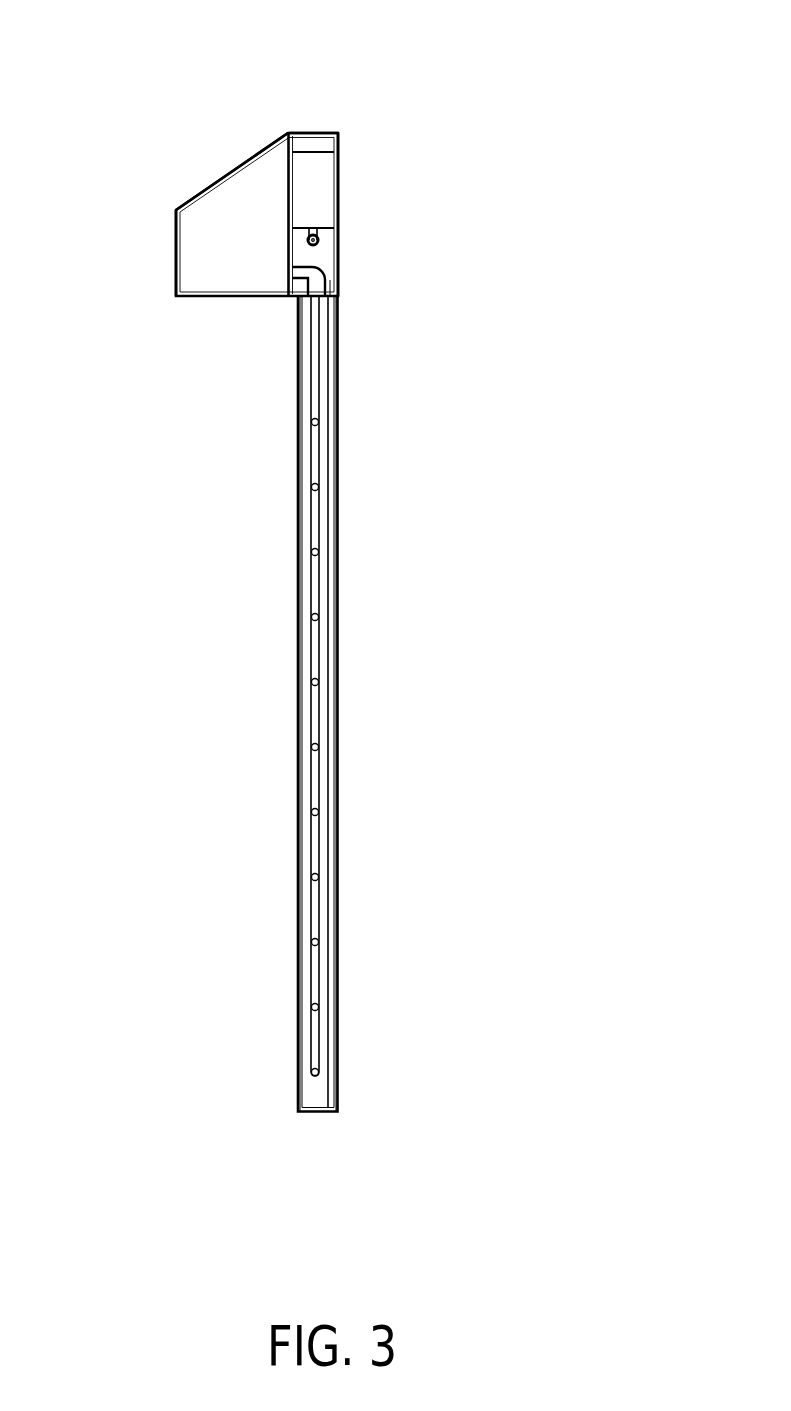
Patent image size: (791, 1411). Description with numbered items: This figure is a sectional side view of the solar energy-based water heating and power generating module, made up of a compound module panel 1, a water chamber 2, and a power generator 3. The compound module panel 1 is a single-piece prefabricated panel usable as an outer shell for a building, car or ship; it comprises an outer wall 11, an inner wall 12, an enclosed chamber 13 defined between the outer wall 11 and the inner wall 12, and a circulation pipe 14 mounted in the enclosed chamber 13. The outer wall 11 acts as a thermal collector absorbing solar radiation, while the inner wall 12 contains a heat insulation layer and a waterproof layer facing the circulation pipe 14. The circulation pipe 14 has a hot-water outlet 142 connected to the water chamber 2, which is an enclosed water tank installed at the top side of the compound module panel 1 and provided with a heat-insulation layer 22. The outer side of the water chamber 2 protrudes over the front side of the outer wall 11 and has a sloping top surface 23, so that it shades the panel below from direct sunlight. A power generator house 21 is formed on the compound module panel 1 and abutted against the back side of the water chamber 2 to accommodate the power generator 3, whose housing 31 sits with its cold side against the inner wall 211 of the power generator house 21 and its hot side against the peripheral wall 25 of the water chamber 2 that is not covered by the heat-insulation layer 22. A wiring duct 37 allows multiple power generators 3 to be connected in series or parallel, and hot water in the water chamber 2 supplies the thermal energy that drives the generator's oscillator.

The compound module panel 1 is at (360, 757).
The outer wall 11 is at (300, 852).
The inner wall 12 is at (340, 868).
The enclosed chamber 13 is at (325, 987).
The circulation pipe 14 is at (315, 663).
The hot-water outlet 142 is at (280, 296).
The water chamber 2 is at (153, 233).
The power generator house 21 is at (327, 262).
The inner wall of the power generator house 211 is at (338, 192).
The heat-insulation layer 22 is at (180, 276).
The sloping top surface 23 is at (232, 172).
The peripheral wall 25 is at (288, 177).
The power generator 3 is at (318, 130).
The housing 31 is at (320, 168).
The wiring duct 37 is at (320, 239).